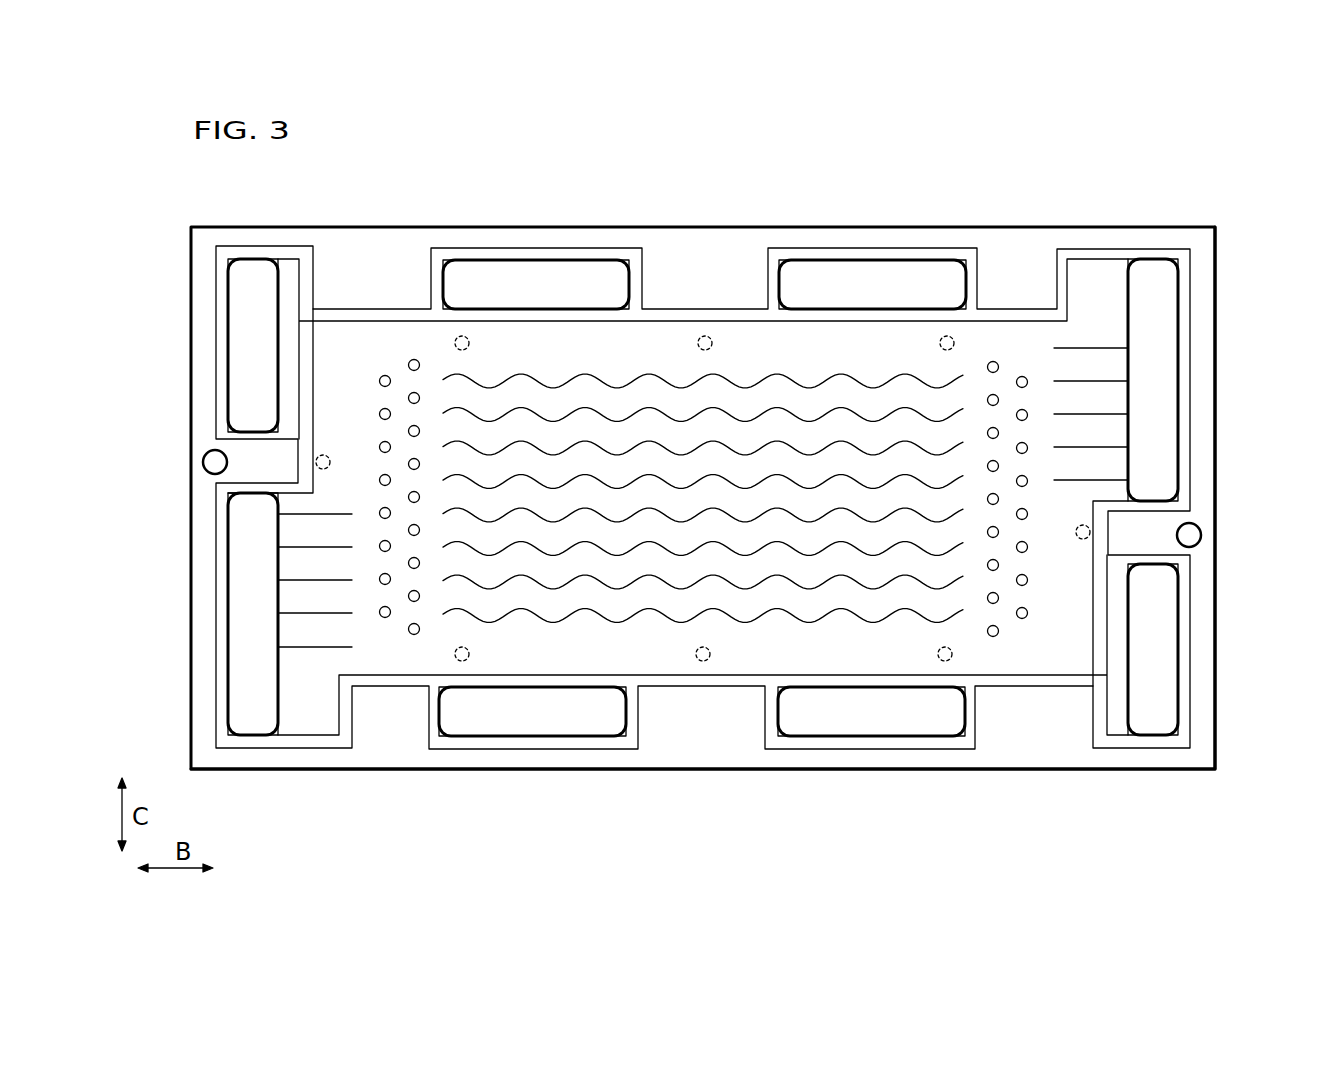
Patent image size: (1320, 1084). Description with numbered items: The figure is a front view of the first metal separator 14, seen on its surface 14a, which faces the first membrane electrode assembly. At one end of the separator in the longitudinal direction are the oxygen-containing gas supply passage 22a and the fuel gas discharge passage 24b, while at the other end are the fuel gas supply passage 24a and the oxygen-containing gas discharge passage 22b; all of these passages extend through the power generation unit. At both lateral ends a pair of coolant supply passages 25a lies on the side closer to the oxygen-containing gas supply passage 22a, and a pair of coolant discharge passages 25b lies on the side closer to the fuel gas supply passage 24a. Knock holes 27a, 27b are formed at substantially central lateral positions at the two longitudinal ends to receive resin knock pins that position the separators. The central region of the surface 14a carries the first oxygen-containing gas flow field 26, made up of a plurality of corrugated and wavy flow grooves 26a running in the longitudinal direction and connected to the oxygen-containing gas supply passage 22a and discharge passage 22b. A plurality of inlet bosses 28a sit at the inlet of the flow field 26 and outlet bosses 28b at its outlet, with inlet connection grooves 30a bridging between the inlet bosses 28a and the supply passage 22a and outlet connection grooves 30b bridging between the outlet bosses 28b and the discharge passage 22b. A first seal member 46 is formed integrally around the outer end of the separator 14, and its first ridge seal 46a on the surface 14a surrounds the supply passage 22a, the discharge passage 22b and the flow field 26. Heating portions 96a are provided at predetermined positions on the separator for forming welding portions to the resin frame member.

The first metal separator 14 is at (322, 190).
The surface 14a is at (1015, 747).
The oxygen-containing gas supply passage 22a is at (1147, 365).
The oxygen-containing gas discharge passage 22b is at (247, 582).
The fuel gas supply passage 24a is at (247, 347).
The fuel gas discharge passage 24b is at (1165, 650).
The coolant supply passages 25a is at (877, 283).
The coolant discharge passages 25b is at (533, 278).
The first oxygen-containing gas flow field 26 is at (703, 402).
The corrugated and wavy flow grooves 26a is at (726, 445).
The knock hole 27a is at (1200, 537).
The knock hole 27b is at (213, 462).
The inlet bosses 28a is at (995, 395).
The outlet bosses 28b is at (412, 601).
The inlet connection grooves 30a is at (1110, 438).
The outlet connection grooves 30b is at (307, 533).
The first seal member 46 is at (619, 771).
The first ridge seal 46a is at (694, 688).
The heating portions 96a is at (470, 343).